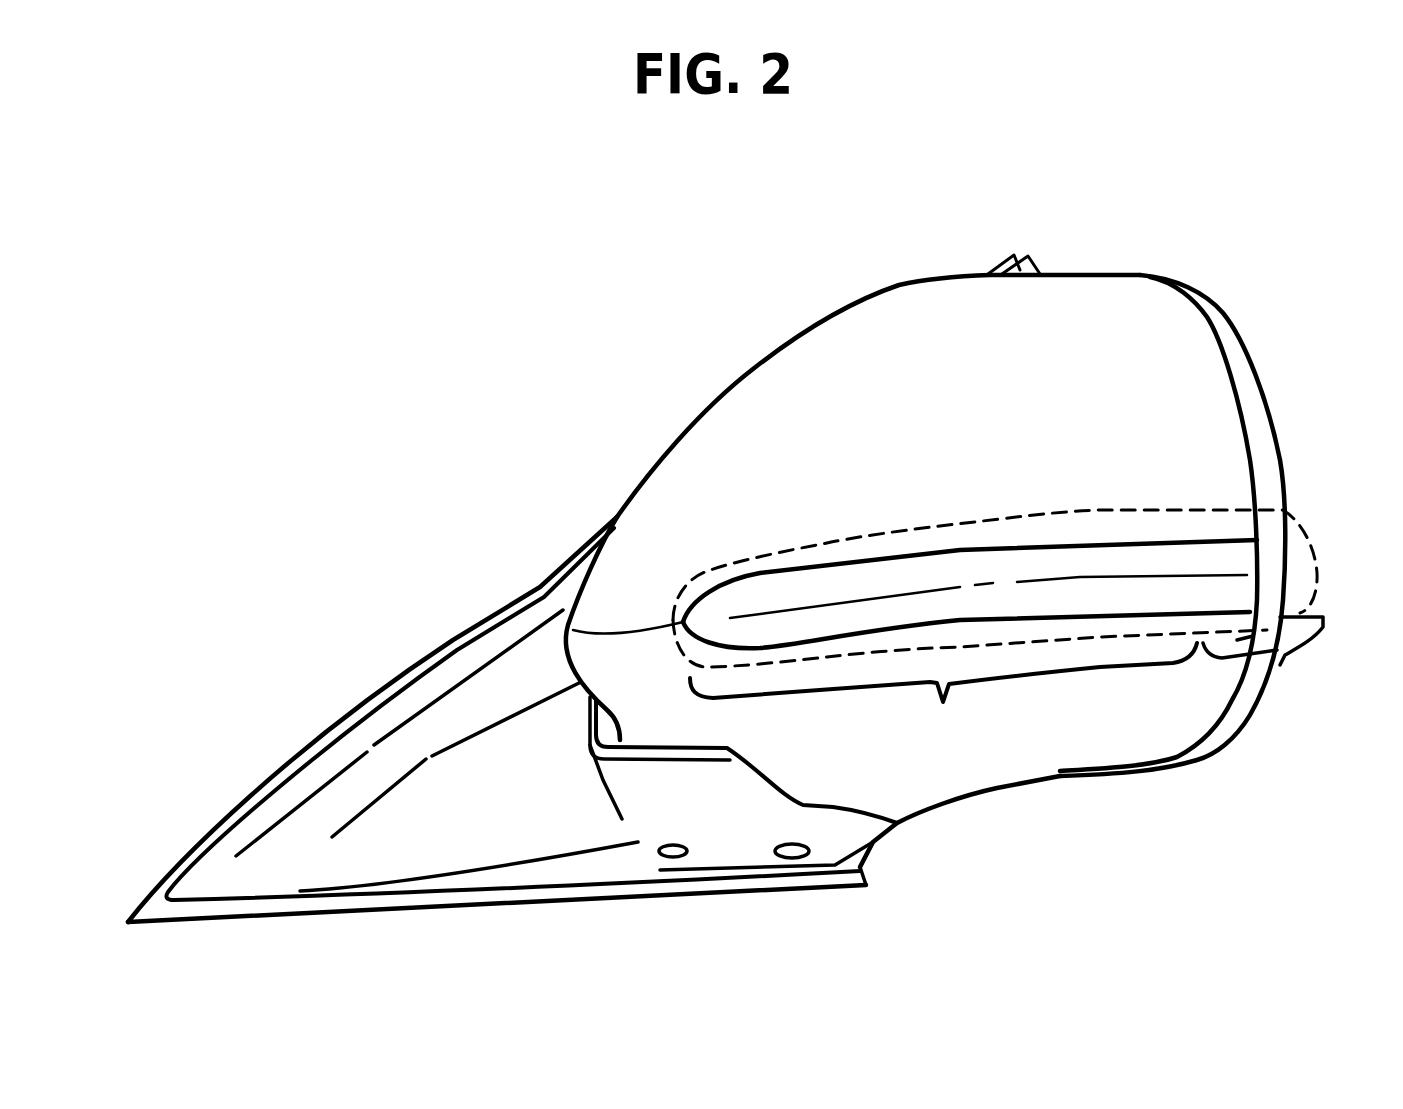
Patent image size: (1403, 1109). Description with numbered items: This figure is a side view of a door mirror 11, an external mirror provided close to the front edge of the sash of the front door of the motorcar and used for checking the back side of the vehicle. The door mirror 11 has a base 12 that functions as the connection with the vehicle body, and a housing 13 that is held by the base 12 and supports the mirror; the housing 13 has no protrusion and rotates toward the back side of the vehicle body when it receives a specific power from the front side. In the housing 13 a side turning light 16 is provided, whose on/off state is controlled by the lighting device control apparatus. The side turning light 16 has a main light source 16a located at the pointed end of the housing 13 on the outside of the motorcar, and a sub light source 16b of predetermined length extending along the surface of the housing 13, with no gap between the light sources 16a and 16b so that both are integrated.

The door mirror 11 is at (1219, 278).
The base 12 is at (315, 716).
The housing 13 is at (763, 402).
The side turning light 16 is at (1037, 507).
The main light source 16a is at (1285, 660).
The sub light source 16b is at (943, 703).